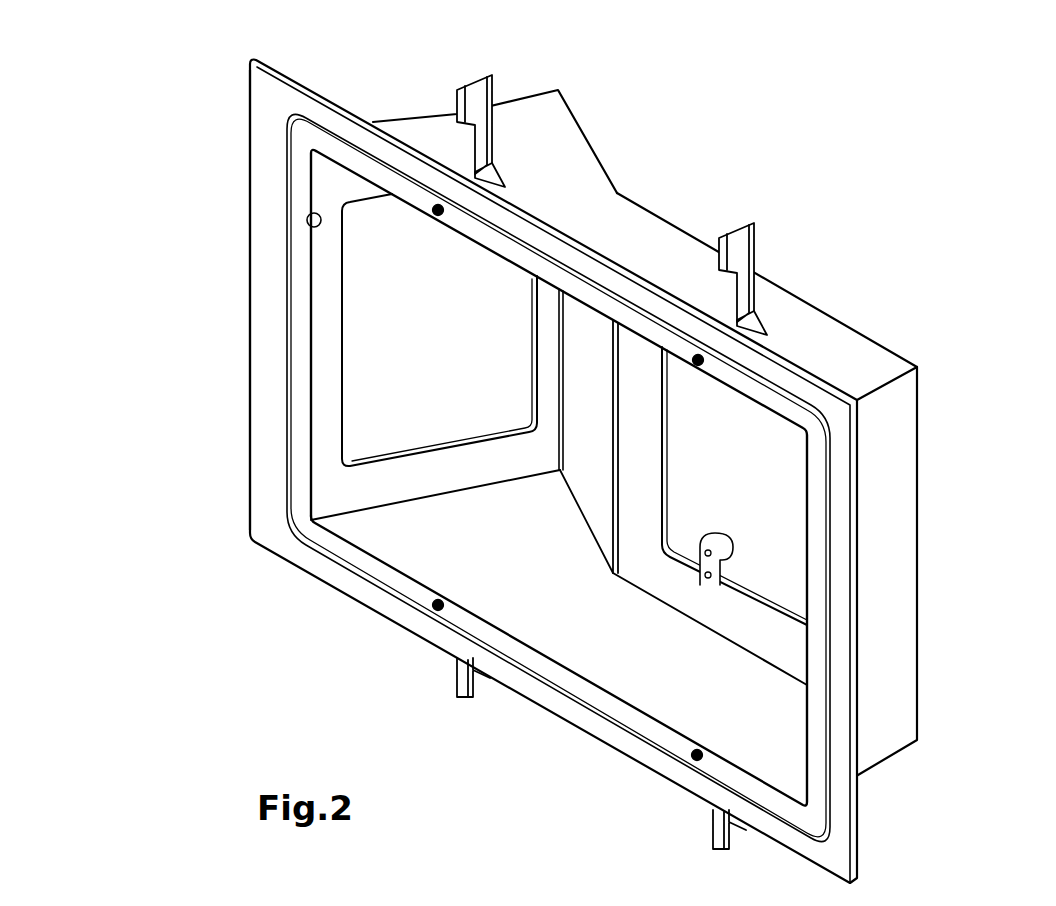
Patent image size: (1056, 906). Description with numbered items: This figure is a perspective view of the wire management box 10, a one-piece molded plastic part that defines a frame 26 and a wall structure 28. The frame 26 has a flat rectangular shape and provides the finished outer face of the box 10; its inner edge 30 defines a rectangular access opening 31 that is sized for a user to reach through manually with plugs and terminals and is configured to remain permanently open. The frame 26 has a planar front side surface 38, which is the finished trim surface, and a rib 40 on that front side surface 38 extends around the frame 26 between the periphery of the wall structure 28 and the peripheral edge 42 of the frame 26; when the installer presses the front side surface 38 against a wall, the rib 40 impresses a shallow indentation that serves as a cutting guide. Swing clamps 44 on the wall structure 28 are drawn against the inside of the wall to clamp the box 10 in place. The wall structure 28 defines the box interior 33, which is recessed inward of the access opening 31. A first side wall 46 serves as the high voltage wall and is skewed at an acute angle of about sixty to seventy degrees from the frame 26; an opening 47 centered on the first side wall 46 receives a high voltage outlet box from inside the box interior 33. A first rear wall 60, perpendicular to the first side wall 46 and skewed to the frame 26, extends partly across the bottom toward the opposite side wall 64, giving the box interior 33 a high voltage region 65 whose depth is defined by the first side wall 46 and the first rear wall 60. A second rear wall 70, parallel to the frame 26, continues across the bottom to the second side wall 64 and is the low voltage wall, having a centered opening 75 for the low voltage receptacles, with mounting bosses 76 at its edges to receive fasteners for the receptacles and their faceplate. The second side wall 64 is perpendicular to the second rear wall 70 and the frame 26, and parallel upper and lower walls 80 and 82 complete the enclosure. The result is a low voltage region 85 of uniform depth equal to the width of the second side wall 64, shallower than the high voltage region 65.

The wire management box 10 is at (200, 155).
The frame 26 is at (263, 107).
The wall structure 28 is at (419, 115).
The inner edge 30 is at (310, 230).
The access opening 31 is at (318, 323).
The box interior 33 is at (574, 428).
The front side surface 38 is at (263, 362).
The rib 40 is at (287, 408).
The peripheral edge 42 is at (318, 92).
The swing clamps 44 is at (481, 73).
The first side wall 46 is at (328, 424).
The opening 47 is at (383, 452).
The first rear wall 60 is at (590, 353).
The second side wall 64 is at (893, 552).
The high voltage region 65 is at (466, 542).
The second rear wall 70 is at (637, 518).
The opening 75 is at (755, 602).
The mounting bosses 76 is at (722, 537).
The upper wall 80 is at (627, 228).
The lower wall 82 is at (643, 690).
The low voltage region 85 is at (624, 668).